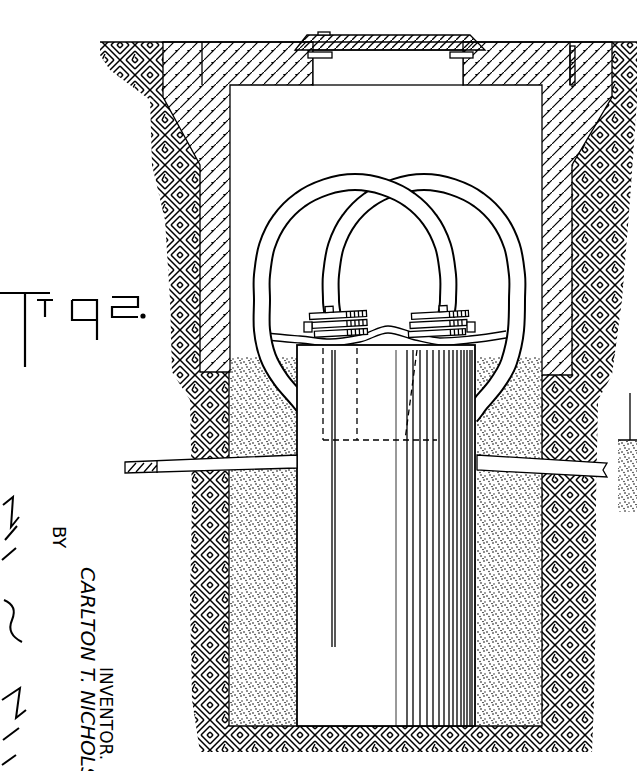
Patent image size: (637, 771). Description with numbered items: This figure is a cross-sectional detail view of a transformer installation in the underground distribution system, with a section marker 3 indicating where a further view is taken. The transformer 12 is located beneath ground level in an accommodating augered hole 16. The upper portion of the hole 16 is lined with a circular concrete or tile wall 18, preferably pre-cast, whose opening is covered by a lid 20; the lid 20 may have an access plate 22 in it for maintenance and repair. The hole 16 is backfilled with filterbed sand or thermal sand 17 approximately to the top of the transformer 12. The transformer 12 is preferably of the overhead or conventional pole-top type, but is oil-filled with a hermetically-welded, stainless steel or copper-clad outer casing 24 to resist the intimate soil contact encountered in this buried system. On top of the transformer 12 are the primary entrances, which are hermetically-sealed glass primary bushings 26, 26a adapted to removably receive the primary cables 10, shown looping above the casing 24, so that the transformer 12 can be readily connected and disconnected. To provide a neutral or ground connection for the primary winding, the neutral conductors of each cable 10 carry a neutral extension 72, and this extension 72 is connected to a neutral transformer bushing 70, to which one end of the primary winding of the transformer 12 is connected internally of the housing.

The section line for FIG. 3 is at (150, 82).
The primary cable 10 is at (417, 171).
The transformer 12 is at (295, 578).
The augered hole 16 is at (237, 656).
The thermal sand 17 is at (510, 597).
The concrete or tile wall 18 is at (233, 199).
The lid 20 is at (267, 85).
The access plate 22 is at (410, 42).
The outer casing 24 is at (297, 515).
The primary bushing 26 is at (310, 312).
The primary bushing 26a is at (415, 312).
The neutral transformer bushing 70 is at (388, 333).
The neutral extension 72 is at (312, 326).